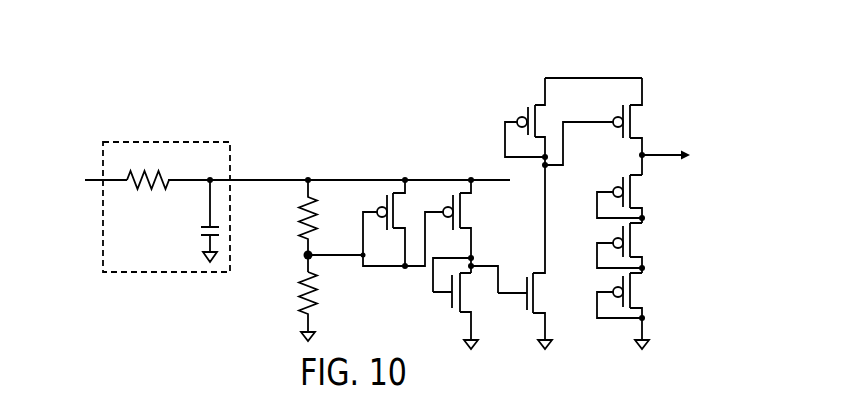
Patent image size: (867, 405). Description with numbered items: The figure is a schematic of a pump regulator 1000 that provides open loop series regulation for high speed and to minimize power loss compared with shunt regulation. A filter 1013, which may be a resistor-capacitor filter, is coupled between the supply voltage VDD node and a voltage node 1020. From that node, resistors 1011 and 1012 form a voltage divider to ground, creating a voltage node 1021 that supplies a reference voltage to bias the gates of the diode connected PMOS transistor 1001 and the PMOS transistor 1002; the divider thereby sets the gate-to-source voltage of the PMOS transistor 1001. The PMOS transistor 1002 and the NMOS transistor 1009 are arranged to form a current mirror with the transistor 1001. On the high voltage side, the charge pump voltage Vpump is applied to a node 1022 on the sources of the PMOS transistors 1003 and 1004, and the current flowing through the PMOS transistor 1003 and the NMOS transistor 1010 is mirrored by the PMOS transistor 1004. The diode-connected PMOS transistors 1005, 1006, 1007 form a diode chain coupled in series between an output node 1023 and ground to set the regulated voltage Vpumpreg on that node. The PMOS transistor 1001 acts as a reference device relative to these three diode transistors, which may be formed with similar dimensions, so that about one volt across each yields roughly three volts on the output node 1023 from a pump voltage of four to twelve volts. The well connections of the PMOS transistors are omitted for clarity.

The pump regulator 1000 is at (531, 42).
The diode connected PMOS transistor 1001 is at (402, 215).
The PMOS transistor 1002 is at (466, 213).
The PMOS transistor 1003 is at (527, 111).
The PMOS transistor 1004 is at (638, 122).
The diode-connected PMOS transistor 1005 is at (638, 193).
The diode-connected PMOS transistor 1006 is at (638, 245).
The diode-connected PMOS transistor 1007 is at (638, 294).
The NMOS transistor 1009 is at (465, 294).
The NMOS transistor 1010 is at (540, 295).
The resistor 1011 is at (300, 214).
The resistor 1012 is at (300, 290).
The filter 1013 is at (170, 260).
The voltage node 1020 is at (375, 180).
The voltage node 1021 is at (381, 267).
The node 1022 is at (568, 78).
The output node 1023 is at (684, 153).